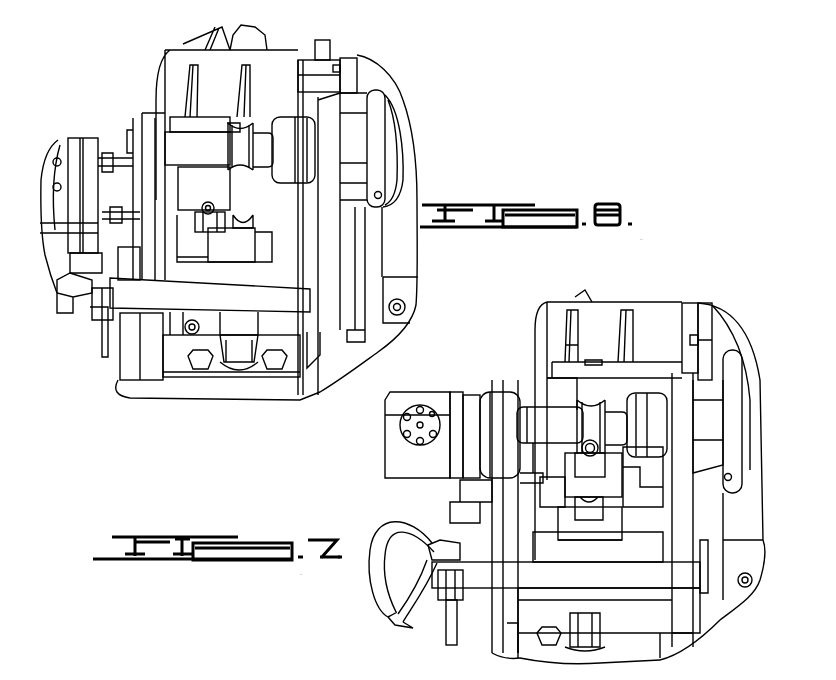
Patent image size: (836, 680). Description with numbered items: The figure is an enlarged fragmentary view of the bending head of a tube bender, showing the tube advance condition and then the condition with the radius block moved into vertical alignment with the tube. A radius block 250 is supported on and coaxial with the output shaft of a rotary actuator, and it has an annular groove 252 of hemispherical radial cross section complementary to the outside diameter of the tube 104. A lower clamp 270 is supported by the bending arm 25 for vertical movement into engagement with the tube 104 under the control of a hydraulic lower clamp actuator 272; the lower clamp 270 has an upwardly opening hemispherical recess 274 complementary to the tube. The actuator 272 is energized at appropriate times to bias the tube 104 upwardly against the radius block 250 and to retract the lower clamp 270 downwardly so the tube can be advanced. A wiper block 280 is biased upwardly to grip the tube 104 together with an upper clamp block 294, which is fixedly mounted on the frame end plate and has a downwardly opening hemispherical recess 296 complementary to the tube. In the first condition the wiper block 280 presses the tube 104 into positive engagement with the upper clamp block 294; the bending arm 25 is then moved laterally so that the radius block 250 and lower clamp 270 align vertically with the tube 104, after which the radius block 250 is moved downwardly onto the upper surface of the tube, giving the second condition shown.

In FIG. 6, the bending arm 25 is at (367, 344).
In FIG. 7, the bending arm 25 is at (713, 611).
In FIG. 6, the tube 104 is at (207, 214).
In FIG. 6, the radius block 250 is at (263, 116).
In FIG. 7, the radius block 250 is at (615, 390).
In FIG. 6, the annular groove 252 is at (247, 172).
In FIG. 6, the lower clamp 270 is at (252, 251).
In FIG. 7, the lower clamp 270 is at (596, 530).
In FIG. 6, the hydraulic lower clamp actuator 272 is at (215, 311).
In FIG. 7, the hydraulic lower clamp actuator 272 is at (632, 592).
In FIG. 6, the upwardly opening hemispherical recess 274 is at (247, 210).
In FIG. 6, the wiper block 280 is at (197, 215).
In FIG. 7, the wiper block 280 is at (577, 461).
In FIG. 6, the upper clamp block 294 is at (193, 160).
In FIG. 6, the downwardly opening hemispherical recess 296 is at (205, 203).